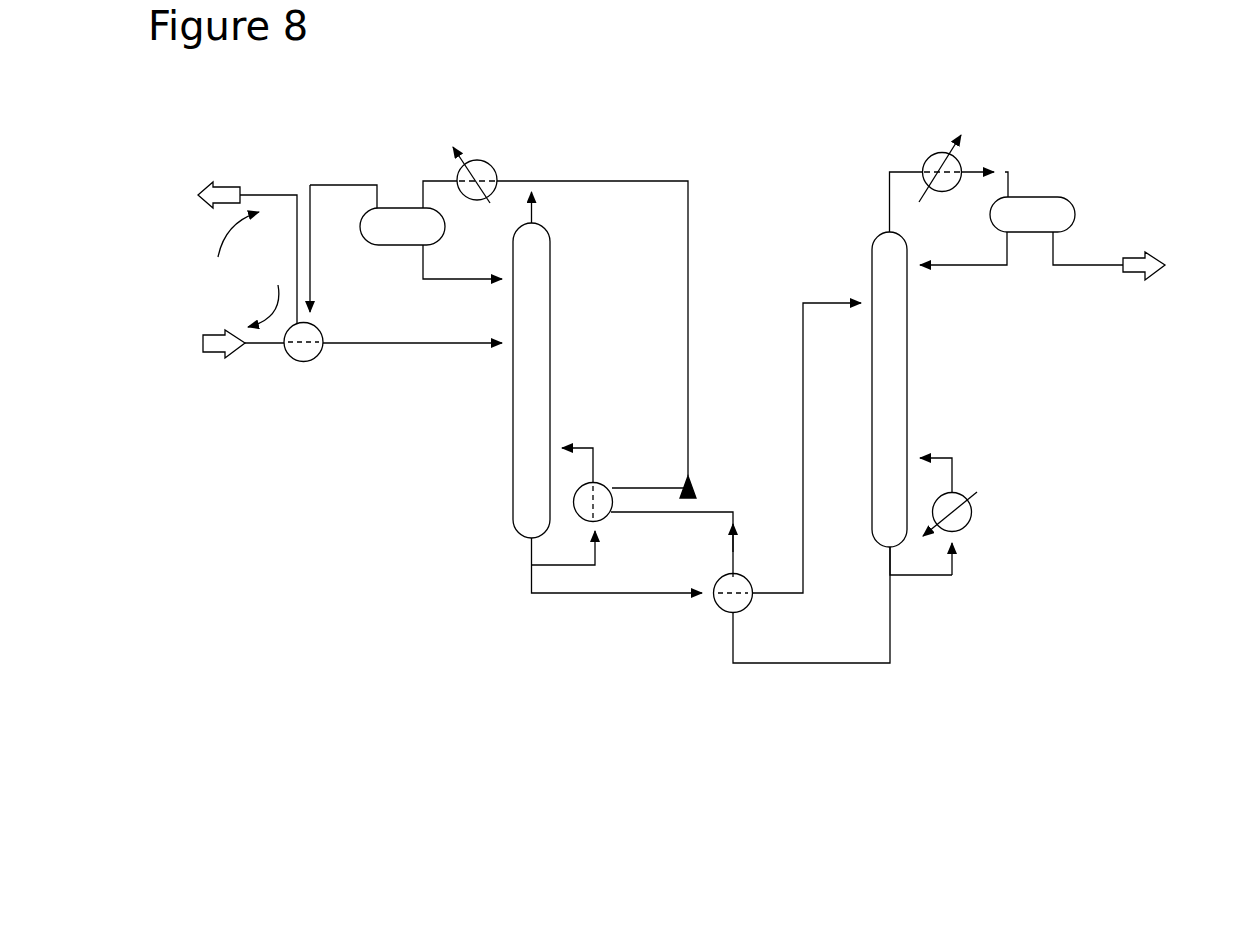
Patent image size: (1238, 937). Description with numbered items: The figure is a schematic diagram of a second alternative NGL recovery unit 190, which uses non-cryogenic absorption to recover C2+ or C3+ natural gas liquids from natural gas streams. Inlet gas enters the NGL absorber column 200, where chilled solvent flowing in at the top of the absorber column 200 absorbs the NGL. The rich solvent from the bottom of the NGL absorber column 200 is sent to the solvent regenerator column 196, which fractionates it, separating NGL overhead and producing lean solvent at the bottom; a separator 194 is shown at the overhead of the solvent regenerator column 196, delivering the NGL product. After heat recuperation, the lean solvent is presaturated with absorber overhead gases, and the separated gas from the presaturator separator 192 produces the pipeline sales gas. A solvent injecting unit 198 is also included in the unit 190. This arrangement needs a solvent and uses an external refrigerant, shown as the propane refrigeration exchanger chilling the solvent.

The second alternative NGL recovery unit 190 is at (768, 60).
The presaturator separator 192 is at (377, 245).
The separator 194 is at (1040, 197).
The solvent regenerator column 196 is at (907, 350).
The solvent injecting unit 198 is at (967, 525).
The NGL absorber column 200 is at (550, 345).